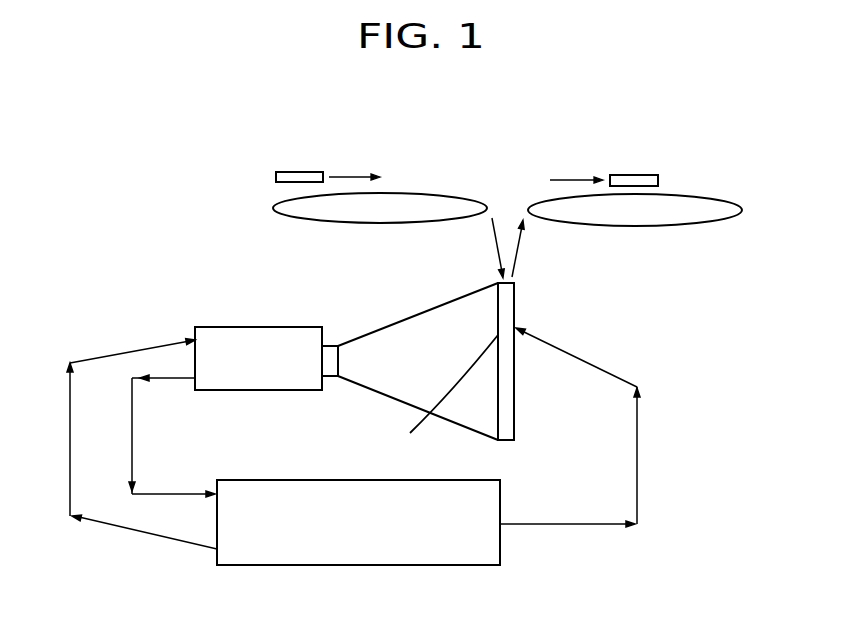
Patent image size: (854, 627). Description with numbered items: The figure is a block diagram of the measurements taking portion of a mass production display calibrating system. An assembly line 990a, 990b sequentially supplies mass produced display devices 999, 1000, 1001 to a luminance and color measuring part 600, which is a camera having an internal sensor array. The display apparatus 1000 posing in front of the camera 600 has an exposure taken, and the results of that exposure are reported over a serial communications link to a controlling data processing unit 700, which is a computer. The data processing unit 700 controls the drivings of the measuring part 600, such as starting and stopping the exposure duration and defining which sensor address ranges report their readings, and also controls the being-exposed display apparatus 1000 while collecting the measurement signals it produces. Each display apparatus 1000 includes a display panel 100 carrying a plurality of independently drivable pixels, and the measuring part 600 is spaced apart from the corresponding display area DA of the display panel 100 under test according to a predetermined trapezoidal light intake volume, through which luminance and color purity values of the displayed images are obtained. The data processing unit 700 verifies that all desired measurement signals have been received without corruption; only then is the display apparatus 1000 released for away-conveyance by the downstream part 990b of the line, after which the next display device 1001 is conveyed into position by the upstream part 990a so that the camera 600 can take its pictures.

The display device 1001 is at (328, 163).
The display device 999 is at (604, 167).
The assembly line upstream part 990a is at (380, 208).
The assembly line downstream part 990b is at (635, 210).
The luminance and color measuring part 600 is at (258, 338).
The display panel 100 is at (516, 383).
The display apparatus 1000 is at (464, 367).
The display area DA is at (439, 393).
The data processing unit 700 is at (358, 522).